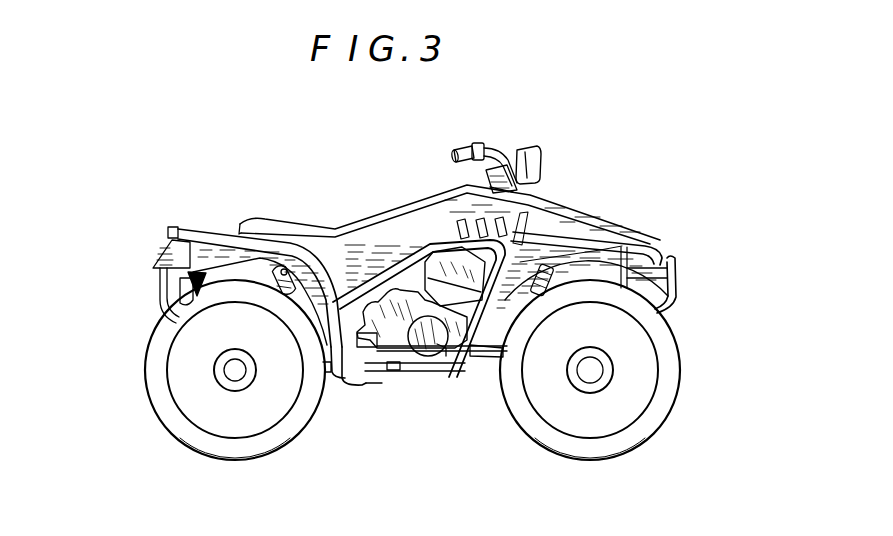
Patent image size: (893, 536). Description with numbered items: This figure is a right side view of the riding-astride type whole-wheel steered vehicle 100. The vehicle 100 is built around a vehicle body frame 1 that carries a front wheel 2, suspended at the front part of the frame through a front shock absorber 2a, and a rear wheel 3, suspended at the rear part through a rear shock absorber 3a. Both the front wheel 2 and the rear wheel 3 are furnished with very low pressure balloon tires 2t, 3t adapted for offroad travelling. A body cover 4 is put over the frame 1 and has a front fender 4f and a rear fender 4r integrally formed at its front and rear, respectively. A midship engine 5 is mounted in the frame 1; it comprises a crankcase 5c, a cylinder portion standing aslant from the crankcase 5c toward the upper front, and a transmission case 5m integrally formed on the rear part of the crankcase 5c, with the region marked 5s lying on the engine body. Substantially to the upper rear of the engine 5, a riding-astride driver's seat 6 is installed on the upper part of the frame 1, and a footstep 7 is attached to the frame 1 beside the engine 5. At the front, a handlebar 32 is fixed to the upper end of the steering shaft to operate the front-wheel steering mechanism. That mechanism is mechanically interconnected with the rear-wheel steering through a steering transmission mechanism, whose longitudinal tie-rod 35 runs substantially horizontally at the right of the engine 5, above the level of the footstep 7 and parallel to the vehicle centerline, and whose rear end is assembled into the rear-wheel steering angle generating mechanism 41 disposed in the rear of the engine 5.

The riding-astride type whole-wheel steered vehicle 100 is at (680, 146).
The vehicle body frame 1 is at (460, 384).
The front wheel 2 is at (688, 373).
The front shock absorber 2a is at (630, 282).
The balloon tire 2t is at (672, 410).
The rear wheel 3 is at (143, 405).
The rear shock absorber 3a is at (173, 276).
The balloon tire 3t is at (146, 360).
The body cover 4 is at (606, 217).
The front fender 4f is at (630, 241).
The rear fender 4r is at (190, 228).
The engine 5 is at (408, 285).
The crankcase 5c is at (437, 344).
The transmission case 5m is at (362, 305).
The cylinder 5s is at (443, 262).
The driver's seat 6 is at (307, 234).
The footstep 7 is at (392, 370).
The handlebar 32 is at (495, 146).
The longitudinal tie-rod 35 is at (428, 354).
The rear-wheel steering angle generating mechanism 41 is at (333, 375).